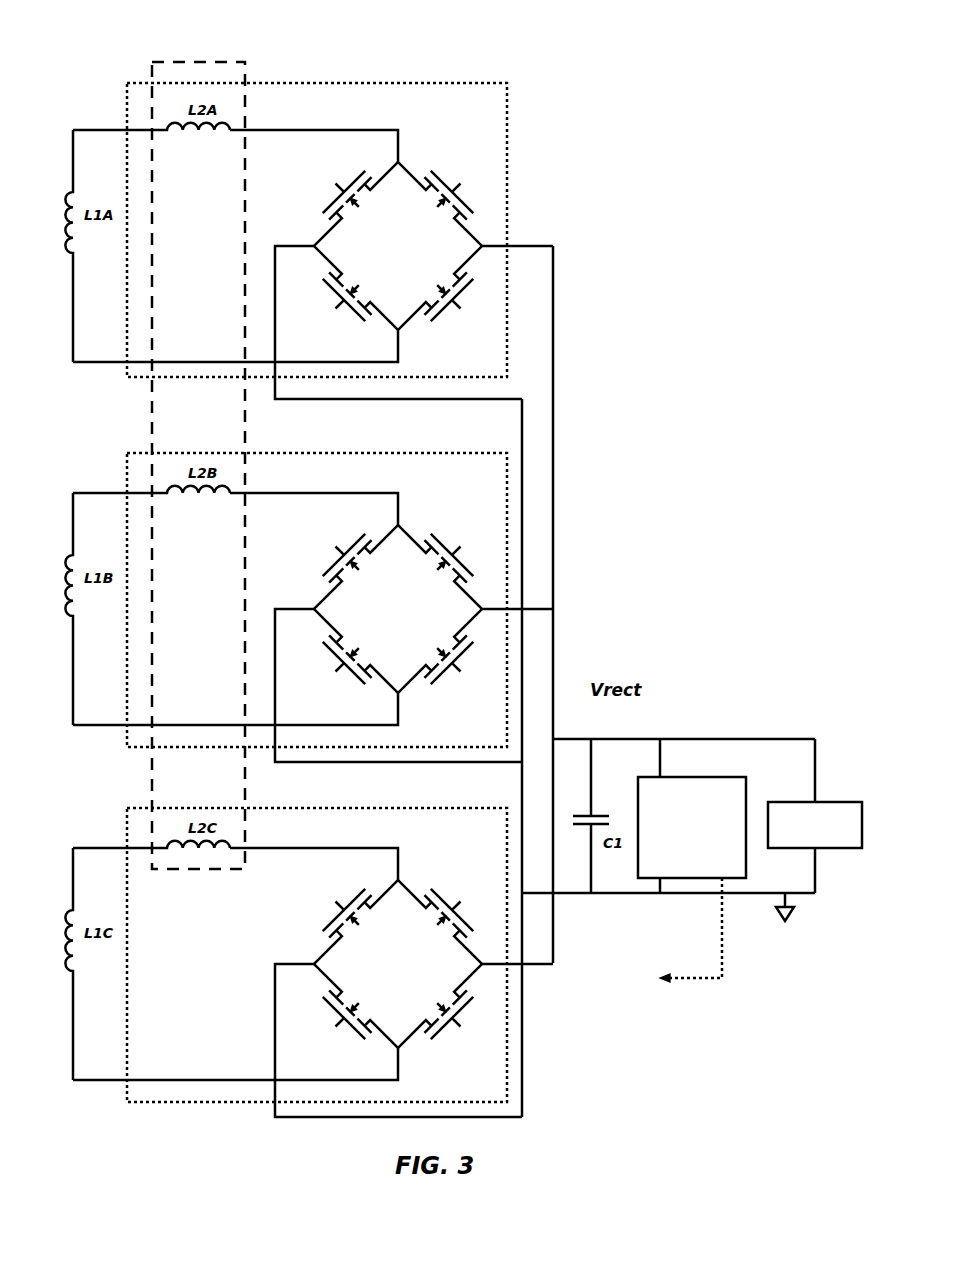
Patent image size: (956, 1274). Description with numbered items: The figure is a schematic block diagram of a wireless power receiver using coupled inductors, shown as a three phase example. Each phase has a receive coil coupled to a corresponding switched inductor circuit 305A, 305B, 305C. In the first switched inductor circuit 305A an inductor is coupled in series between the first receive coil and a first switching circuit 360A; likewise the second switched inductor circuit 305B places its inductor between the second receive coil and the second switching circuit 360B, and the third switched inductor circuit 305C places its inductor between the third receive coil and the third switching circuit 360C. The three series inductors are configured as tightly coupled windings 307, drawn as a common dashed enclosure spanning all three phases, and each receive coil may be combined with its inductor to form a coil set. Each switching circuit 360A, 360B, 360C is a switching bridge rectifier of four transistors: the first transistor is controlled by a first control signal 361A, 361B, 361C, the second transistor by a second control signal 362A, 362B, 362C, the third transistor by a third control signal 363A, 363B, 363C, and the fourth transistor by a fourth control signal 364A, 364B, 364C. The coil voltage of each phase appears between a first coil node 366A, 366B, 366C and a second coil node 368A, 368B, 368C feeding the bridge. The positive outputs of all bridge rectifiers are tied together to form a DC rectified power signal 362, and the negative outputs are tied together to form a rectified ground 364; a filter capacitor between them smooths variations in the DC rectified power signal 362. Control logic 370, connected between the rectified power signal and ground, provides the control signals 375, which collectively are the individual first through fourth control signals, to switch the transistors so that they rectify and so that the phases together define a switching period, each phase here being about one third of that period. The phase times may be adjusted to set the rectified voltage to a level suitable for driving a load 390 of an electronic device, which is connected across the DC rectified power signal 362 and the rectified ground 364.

The first switched inductor circuit 305A is at (133, 83).
The second switched inductor circuit 305B is at (289, 588).
The third switched inductor circuit 305C is at (289, 943).
The tightly coupled windings 307 is at (186, 62).
The first switching circuit 360A is at (398, 224).
The second switching circuit 360B is at (398, 587).
The third switching circuit 360C is at (398, 942).
The first control signal 361A is at (347, 195).
The second control signal 362A is at (347, 297).
The third control signal 363A is at (449, 195).
The fourth control signal 364A is at (449, 297).
The first control signal 361B is at (347, 558).
The second control signal 362B is at (347, 660).
The third control signal 363B is at (449, 558).
The fourth control signal 364B is at (449, 660).
The first control signal 361C is at (347, 913).
The second control signal 362C is at (347, 1015).
The third control signal 363C is at (449, 913).
The fourth control signal 364C is at (449, 1015).
The first coil node 366A is at (336, 130).
The first coil node 366B is at (314, 495).
The first coil node 366C is at (314, 850).
The second coil node 368A is at (400, 361).
The second coil node 368B is at (269, 714).
The second coil node 368C is at (269, 1069).
The DC rectified power signal 362 is at (619, 739).
The rectified ground 364 is at (617, 893).
The control logic 370 is at (727, 777).
The control signals 375 is at (724, 940).
The load 390 is at (838, 848).